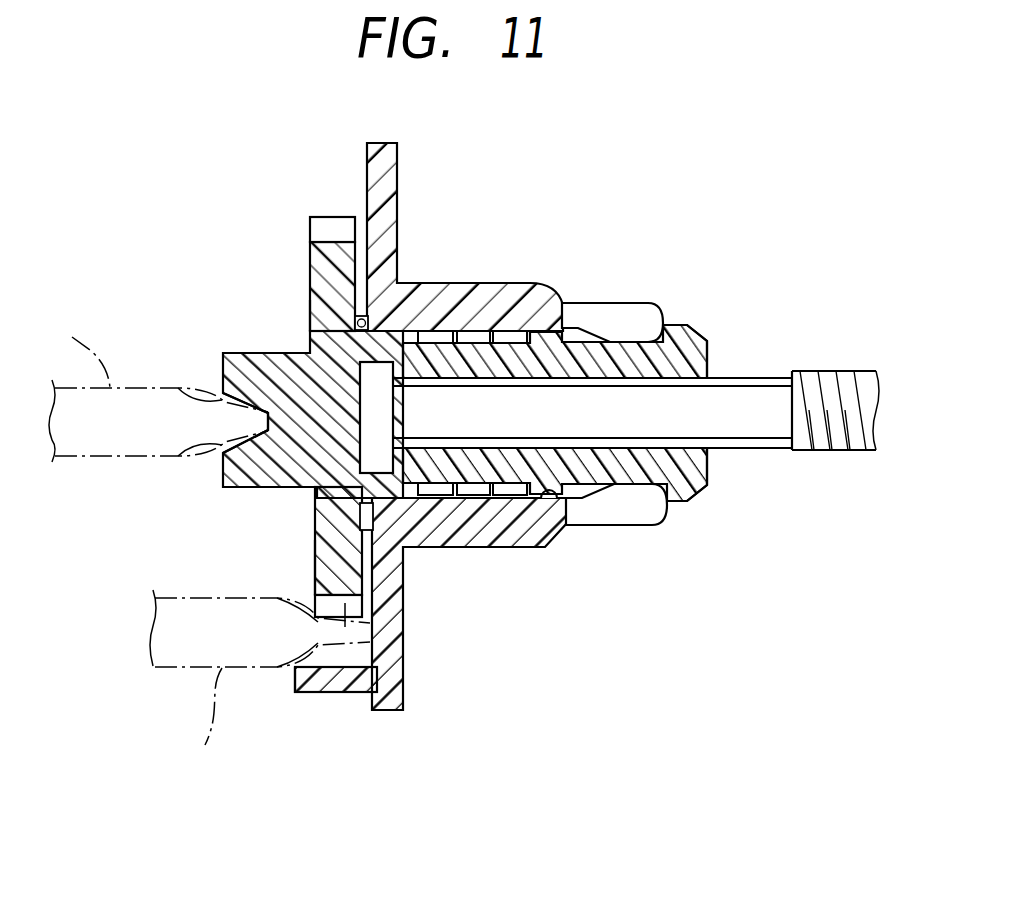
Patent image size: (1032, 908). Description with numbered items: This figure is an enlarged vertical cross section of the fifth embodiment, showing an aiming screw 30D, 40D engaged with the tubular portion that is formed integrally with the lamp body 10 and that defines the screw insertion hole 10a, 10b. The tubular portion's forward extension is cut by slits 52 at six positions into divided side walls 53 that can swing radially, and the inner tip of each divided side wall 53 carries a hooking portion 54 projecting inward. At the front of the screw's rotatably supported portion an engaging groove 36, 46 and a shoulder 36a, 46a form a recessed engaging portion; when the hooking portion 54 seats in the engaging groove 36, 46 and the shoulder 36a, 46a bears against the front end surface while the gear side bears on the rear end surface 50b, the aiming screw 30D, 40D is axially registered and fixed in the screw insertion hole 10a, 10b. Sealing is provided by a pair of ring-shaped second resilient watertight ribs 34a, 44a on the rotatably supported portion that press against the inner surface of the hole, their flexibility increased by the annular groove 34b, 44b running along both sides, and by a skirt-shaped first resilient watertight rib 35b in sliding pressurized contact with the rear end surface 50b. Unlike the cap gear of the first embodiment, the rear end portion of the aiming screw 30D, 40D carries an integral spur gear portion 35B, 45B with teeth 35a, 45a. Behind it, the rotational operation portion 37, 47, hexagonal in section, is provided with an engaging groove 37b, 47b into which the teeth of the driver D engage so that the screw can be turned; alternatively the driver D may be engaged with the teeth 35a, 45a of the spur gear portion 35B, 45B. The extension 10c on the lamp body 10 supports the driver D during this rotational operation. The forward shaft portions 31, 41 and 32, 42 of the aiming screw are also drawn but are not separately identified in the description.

The lamp body 10 is at (398, 172).
The screw insertion hole 10a is at (610, 577).
The screw insertion hole 10b is at (549, 502).
The extension 10c is at (313, 692).
The shaft 31 is at (661, 451).
The shaft 41 is at (836, 453).
The knurled shaft end 32 is at (841, 375).
The knurled shaft end 42 is at (835, 371).
The aiming screw 30D is at (811, 527).
The aiming screw 40D is at (722, 494).
The second resilient watertight ribs 34a is at (501, 259).
The second resilient watertight ribs 44a is at (500, 331).
The annular groove 34b is at (514, 589).
The annular groove 44b is at (440, 498).
The teeth 35a is at (313, 459).
The teeth 45a is at (333, 217).
The spur gear portion 35B is at (281, 384).
The spur gear portion 45B is at (310, 262).
The first resilient watertight rib 35b is at (335, 303).
The engaging groove 36 is at (596, 430).
The engaging groove 46 is at (663, 305).
The shoulder 36a is at (749, 432).
The shoulder 46a is at (705, 333).
The rotational operation portion 37 is at (239, 419).
The rotational operation portion 47 is at (222, 468).
The engaging groove 37b is at (183, 368).
The engaging groove 47b is at (218, 396).
The rear end surface 50b is at (355, 322).
The slits 52 is at (628, 310).
The divided side walls 53 is at (588, 303).
The hooking portion 54 is at (703, 341).
The driver D is at (209, 542).